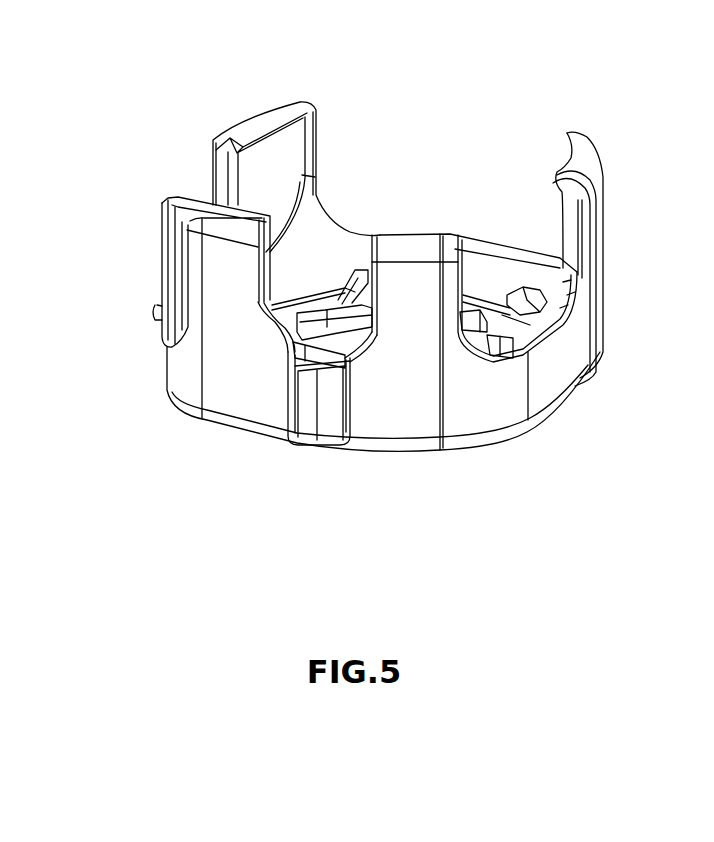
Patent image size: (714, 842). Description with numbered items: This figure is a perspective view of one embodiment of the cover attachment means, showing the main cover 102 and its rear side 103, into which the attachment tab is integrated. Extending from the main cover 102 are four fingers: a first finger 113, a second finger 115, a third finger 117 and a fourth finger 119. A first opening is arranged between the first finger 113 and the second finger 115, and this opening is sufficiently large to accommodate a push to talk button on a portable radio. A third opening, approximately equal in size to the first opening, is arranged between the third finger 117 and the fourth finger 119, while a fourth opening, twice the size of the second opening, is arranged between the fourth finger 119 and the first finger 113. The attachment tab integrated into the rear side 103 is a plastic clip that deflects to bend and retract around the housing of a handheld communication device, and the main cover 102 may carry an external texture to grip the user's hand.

The main cover 102 is at (232, 387).
The rear side 103 is at (502, 315).
The first finger 113 is at (212, 272).
The second finger 115 is at (267, 155).
The third finger 117 is at (412, 252).
The fourth finger 119 is at (565, 133).